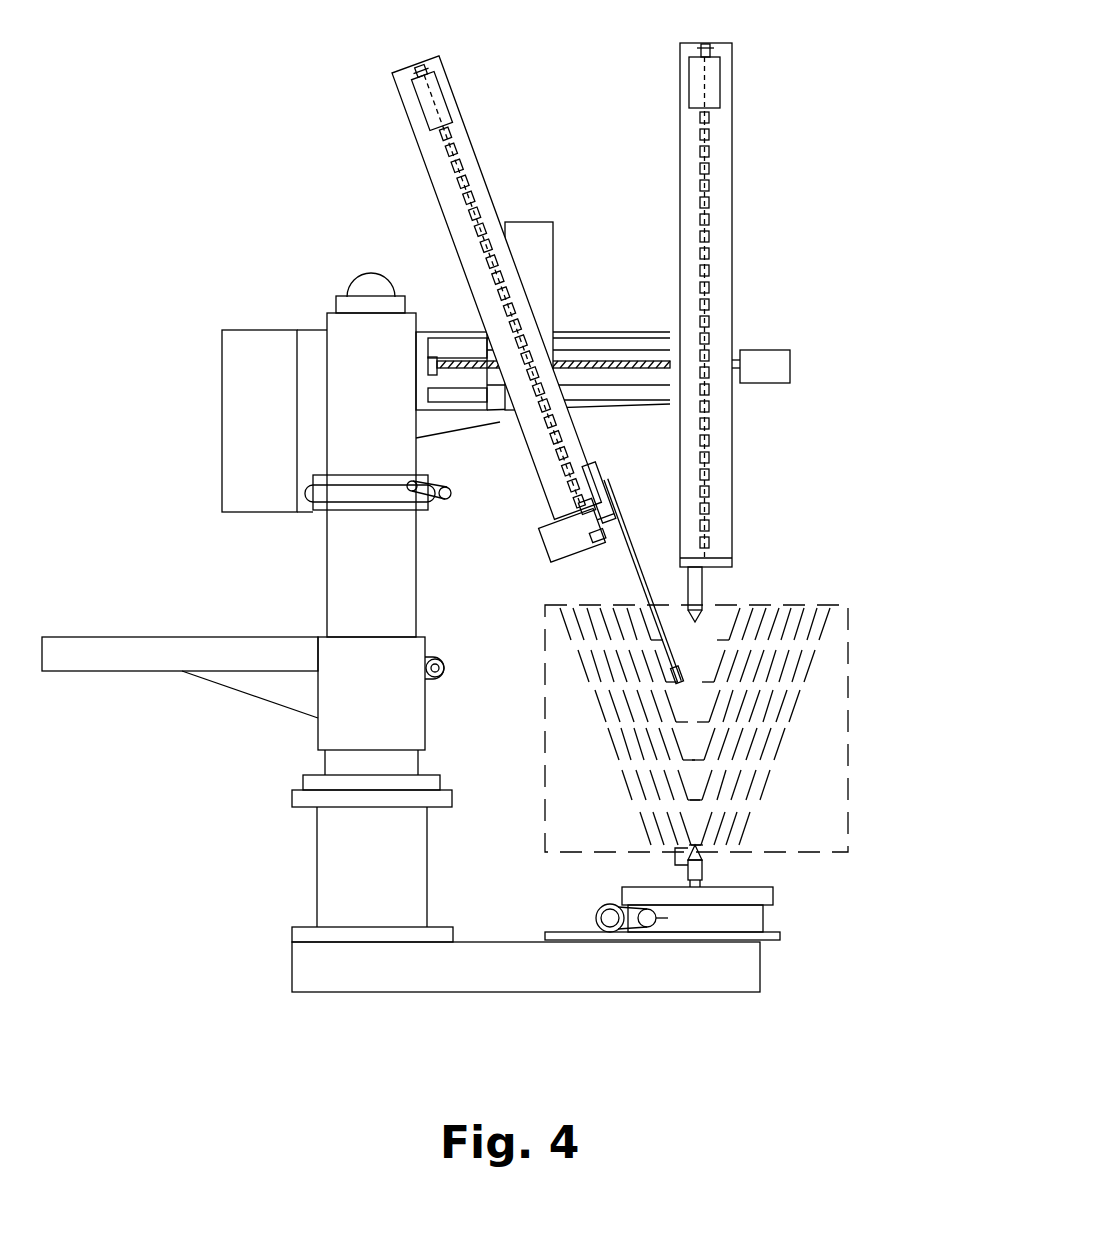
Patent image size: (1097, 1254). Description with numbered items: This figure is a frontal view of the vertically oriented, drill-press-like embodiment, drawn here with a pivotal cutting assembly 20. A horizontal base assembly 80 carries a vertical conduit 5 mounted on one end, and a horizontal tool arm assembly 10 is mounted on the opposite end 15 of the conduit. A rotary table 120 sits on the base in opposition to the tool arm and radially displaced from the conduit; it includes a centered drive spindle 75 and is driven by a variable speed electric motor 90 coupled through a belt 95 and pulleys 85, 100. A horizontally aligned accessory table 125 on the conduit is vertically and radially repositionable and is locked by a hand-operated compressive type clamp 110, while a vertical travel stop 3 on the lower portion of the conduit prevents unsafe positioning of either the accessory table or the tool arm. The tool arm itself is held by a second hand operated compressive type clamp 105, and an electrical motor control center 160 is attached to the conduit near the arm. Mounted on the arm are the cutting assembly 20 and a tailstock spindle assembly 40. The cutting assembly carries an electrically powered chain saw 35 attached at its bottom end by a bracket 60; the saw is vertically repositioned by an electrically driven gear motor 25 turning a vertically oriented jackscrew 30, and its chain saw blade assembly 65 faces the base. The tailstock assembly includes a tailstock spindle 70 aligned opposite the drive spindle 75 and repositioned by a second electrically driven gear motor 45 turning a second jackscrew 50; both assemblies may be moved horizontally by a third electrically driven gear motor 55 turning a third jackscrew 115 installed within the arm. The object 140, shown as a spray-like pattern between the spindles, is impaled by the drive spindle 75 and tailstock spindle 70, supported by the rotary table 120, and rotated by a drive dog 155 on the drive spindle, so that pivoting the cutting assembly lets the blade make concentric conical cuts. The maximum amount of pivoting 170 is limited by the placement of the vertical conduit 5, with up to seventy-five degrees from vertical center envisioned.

The vertical travel stop 3 is at (292, 797).
The vertical conduit 5 is at (325, 562).
The horizontal tool arm assembly 10 is at (620, 328).
The opposite end 15 is at (350, 275).
The cutting assembly 20 is at (503, 378).
The electrically driven gear motor 25 is at (445, 92).
The jackscrew 30 is at (447, 170).
The chain saw 35 is at (540, 552).
The tailstock spindle assembly 40 is at (776, 314).
The second electrically driven gear motor 45 is at (722, 72).
The second jackscrew 50 is at (712, 262).
The third electrically driven gear motor 55 is at (795, 356).
The bracket 60 is at (603, 494).
The chain saw blade assembly 65 is at (636, 580).
The tailstock spindle 70 is at (712, 586).
The drive spindle 75 is at (712, 864).
The horizontal base assembly 80 is at (524, 993).
The pulley 85 is at (612, 938).
The variable speed electric motor 90 is at (618, 945).
The belt 95 is at (641, 937).
The pulley 100 is at (668, 940).
The second hand operated compressive type clamp 105 is at (456, 486).
The hand-operated compressive type clamp 110 is at (447, 676).
The third jackscrew 115 is at (460, 357).
The rotary table 120 is at (782, 905).
The accessory table 125 is at (180, 636).
The object 140 is at (853, 722).
The drive dog 155 is at (668, 868).
The electrical motor control center 160 is at (220, 417).
The maximum amount of pivoting 170 is at (532, 222).